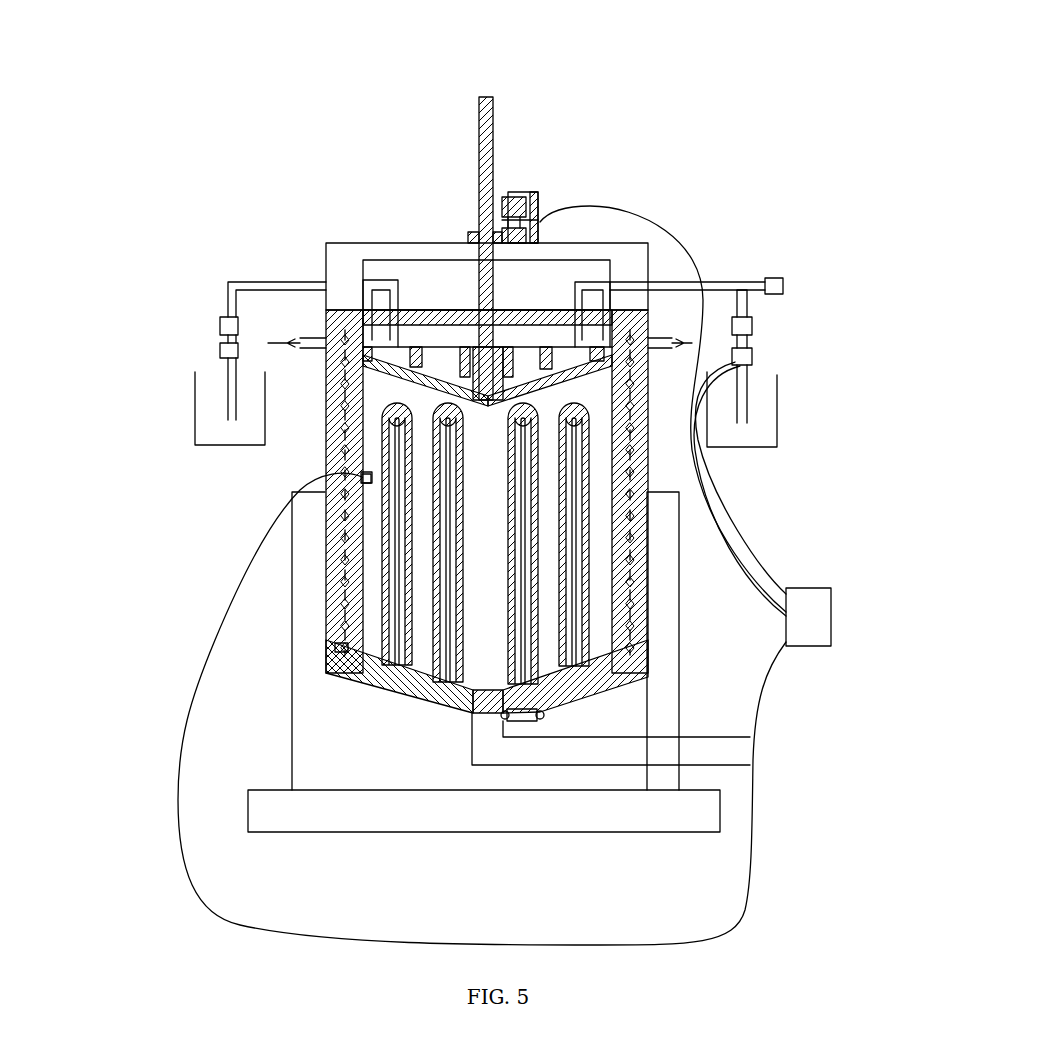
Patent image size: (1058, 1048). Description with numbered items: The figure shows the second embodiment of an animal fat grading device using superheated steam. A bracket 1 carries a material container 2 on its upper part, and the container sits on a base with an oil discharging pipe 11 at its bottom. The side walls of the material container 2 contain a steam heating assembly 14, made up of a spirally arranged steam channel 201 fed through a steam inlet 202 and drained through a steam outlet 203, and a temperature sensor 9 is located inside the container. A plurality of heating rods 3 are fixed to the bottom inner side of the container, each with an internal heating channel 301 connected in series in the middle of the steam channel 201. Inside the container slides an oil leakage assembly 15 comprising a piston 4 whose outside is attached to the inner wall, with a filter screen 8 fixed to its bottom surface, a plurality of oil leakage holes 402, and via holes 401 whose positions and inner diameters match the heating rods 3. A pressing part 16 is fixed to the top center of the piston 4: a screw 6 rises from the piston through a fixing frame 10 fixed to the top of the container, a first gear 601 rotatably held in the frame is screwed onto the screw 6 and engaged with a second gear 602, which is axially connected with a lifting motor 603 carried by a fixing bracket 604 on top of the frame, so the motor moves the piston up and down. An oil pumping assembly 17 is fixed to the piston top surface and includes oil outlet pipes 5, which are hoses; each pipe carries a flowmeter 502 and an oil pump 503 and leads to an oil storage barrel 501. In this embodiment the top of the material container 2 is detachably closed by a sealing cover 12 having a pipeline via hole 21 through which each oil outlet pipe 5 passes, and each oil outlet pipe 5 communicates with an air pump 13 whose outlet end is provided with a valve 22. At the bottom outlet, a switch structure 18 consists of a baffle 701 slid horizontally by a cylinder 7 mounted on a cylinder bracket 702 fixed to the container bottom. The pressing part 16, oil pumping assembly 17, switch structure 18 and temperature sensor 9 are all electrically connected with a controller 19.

The bracket 1 is at (318, 760).
The material container 2 is at (328, 672).
The heating rods 3 is at (345, 647).
The piston 4 is at (468, 393).
The oil outlet pipes 5 is at (648, 273).
The screw 6 is at (493, 185).
The cylinder 7 is at (515, 718).
The filter screen 8 is at (362, 345).
The temperature sensor 9 is at (368, 481).
The fixing frame 10 is at (660, 280).
The oil discharging pipe 11 is at (676, 748).
The sealing cover 12 is at (557, 310).
The air pump 13 is at (760, 292).
The steam heating assembly 14 is at (118, 518).
The oil leakage assembly 15 is at (243, 173).
The pressing part 16 is at (527, 63).
The oil pumping assembly 17 is at (833, 218).
The switch structure 18 is at (460, 883).
The controller 19 is at (812, 618).
The pipeline via hole 21 is at (590, 305).
The valve 22 is at (783, 284).
The steam channel 201 is at (325, 592).
The steam inlet 202 is at (328, 343).
The steam outlet 203 is at (362, 477).
The heating channel 301 is at (405, 607).
The via holes 401 is at (494, 370).
The oil leakage hole 402 is at (385, 362).
The oil storage barrel 501 is at (777, 418).
The flowmeter 502 is at (752, 326).
The oil pump 503 is at (752, 353).
The first gear 601 is at (513, 203).
The second gear 602 is at (546, 232).
The lifting motor 603 is at (538, 222).
The fixing bracket 604 is at (525, 212).
The baffle 701 is at (503, 716).
The cylinder bracket 702 is at (540, 719).